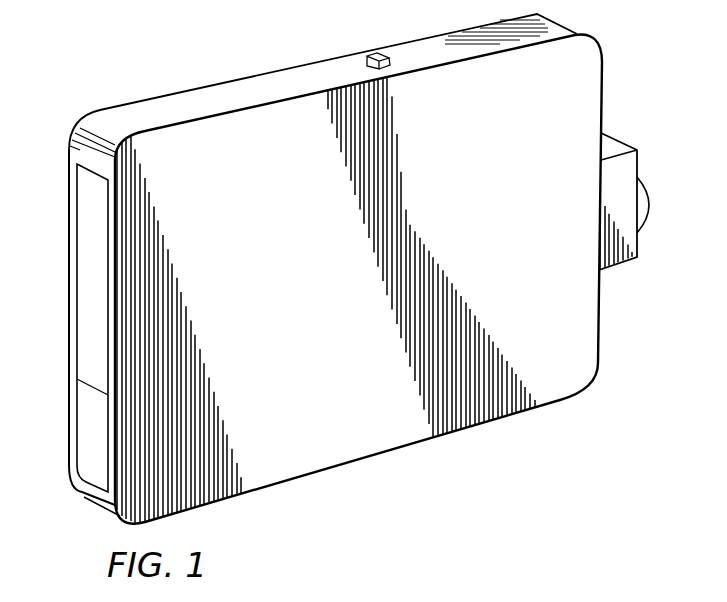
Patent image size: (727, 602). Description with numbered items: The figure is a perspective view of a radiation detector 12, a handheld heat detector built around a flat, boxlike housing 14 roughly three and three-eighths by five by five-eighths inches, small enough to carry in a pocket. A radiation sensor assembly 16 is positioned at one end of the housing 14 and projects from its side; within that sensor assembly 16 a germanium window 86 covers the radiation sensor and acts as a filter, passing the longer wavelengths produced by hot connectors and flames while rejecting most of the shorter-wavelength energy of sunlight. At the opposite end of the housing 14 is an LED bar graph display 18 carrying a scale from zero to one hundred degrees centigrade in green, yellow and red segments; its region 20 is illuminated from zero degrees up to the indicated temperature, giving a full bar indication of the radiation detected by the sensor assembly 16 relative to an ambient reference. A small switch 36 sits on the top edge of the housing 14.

The radiation detector 12 is at (335, 466).
The housing 14 is at (392, 442).
The radiation sensor assembly 16 is at (614, 262).
The LED bar graph display 18 is at (64, 450).
The region 20 is at (85, 404).
The switch 36 is at (378, 55).
The window 86 is at (650, 200).